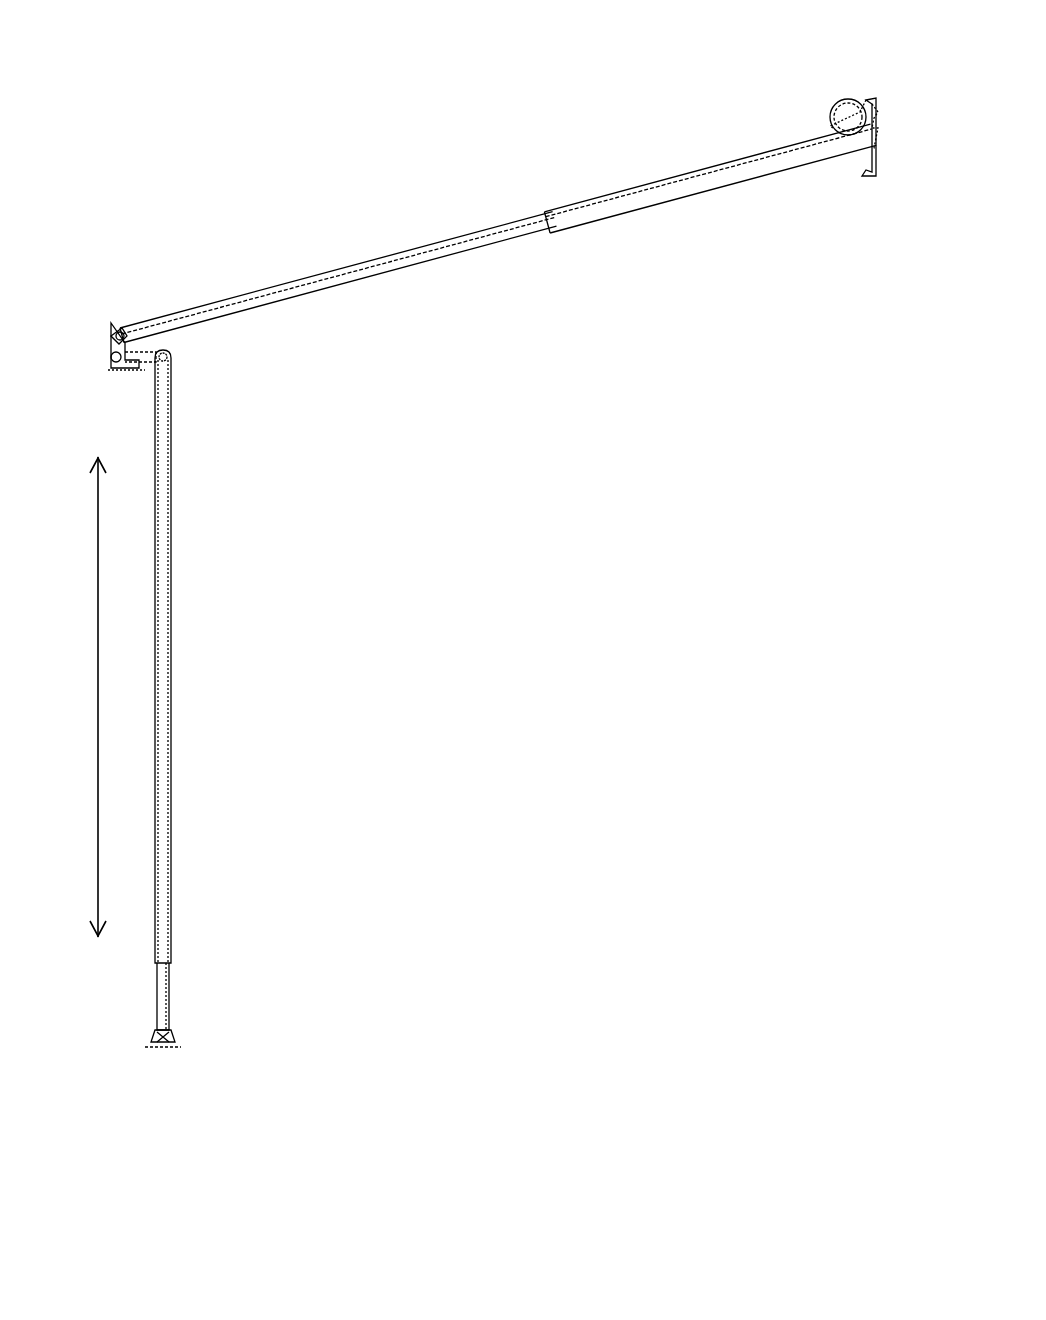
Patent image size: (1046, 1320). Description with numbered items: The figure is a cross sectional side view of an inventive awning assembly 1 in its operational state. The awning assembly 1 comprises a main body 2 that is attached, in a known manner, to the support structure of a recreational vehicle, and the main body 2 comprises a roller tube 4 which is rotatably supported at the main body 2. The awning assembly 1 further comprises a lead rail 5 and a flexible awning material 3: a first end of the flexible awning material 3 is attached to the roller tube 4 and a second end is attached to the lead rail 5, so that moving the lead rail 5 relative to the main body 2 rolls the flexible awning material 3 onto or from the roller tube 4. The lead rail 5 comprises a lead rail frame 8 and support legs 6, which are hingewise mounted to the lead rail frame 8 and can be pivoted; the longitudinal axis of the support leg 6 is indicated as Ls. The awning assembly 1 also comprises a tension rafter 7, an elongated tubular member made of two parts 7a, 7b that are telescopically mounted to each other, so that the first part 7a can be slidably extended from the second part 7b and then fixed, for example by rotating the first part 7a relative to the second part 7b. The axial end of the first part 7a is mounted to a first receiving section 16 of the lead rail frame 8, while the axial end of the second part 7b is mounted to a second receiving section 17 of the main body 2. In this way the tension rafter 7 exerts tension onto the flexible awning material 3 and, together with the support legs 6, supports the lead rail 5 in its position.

The awning assembly 1 is at (165, 152).
The main body 2 is at (855, 102).
The flexible awning material 3 is at (497, 227).
The roller tube 4 is at (845, 113).
The lead rail 5 is at (91, 323).
The support leg 6 is at (173, 500).
The tension rafter 7 is at (333, 287).
The first part of tension rafter 7a is at (401, 268).
The second part of tension rafter 7b is at (605, 219).
The lead rail frame 8 is at (108, 356).
The first receiving section 16 is at (121, 332).
The second receiving section 17 is at (870, 151).
The longitudinal axis of support leg Ls is at (73, 697).